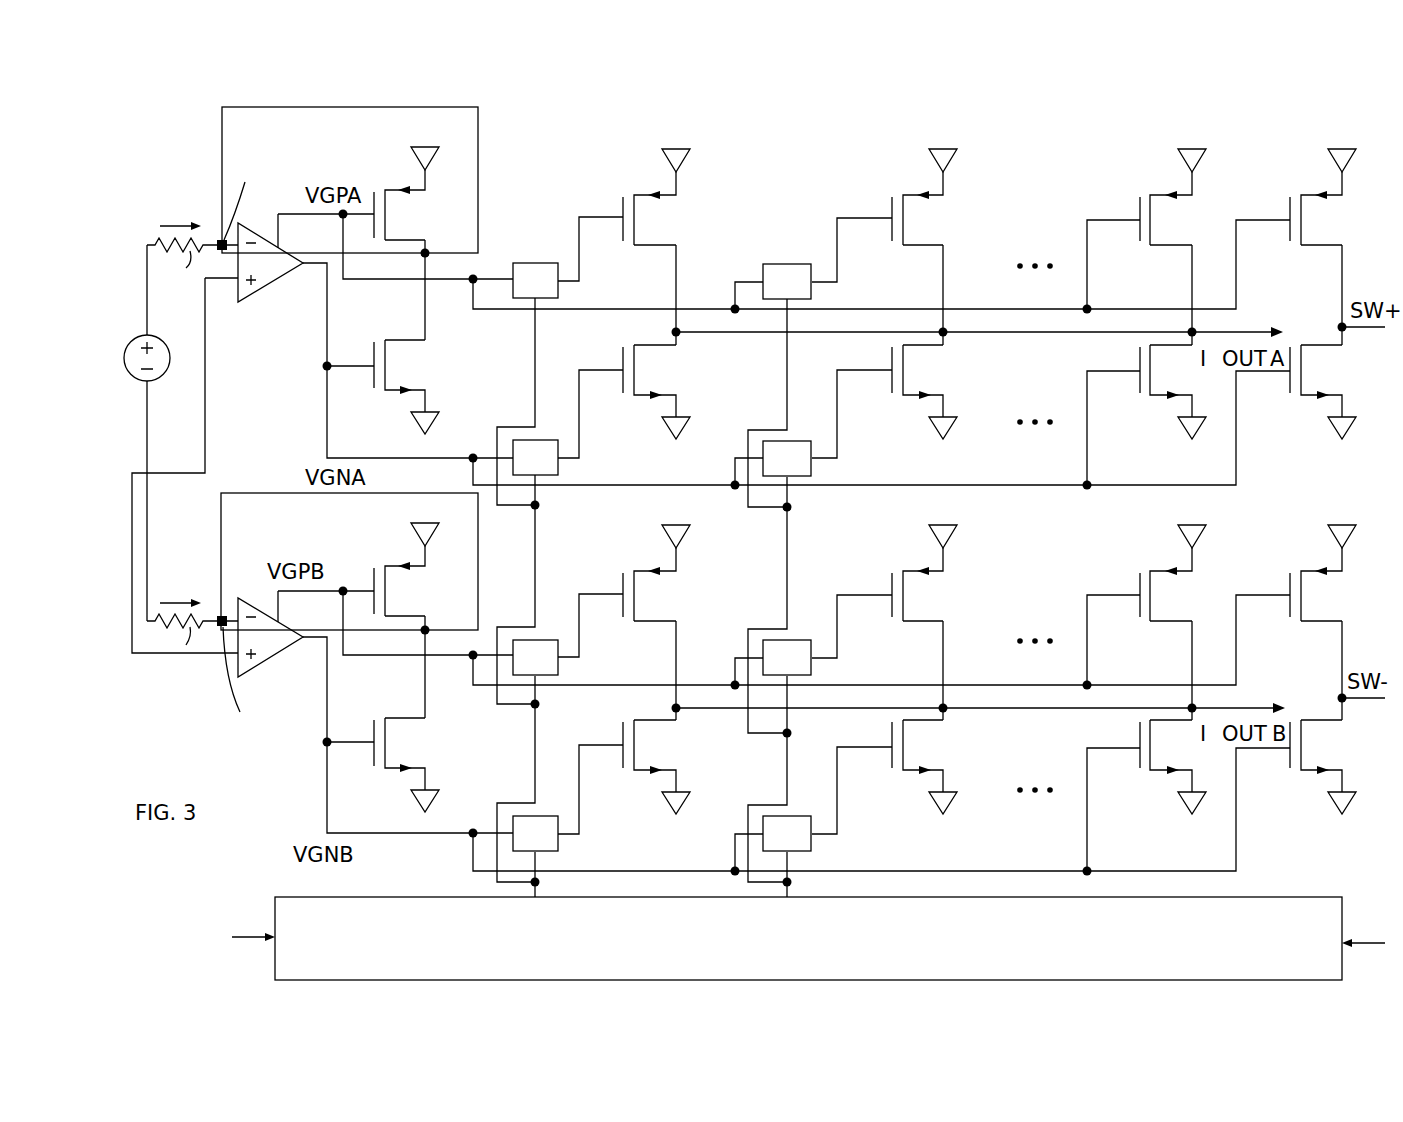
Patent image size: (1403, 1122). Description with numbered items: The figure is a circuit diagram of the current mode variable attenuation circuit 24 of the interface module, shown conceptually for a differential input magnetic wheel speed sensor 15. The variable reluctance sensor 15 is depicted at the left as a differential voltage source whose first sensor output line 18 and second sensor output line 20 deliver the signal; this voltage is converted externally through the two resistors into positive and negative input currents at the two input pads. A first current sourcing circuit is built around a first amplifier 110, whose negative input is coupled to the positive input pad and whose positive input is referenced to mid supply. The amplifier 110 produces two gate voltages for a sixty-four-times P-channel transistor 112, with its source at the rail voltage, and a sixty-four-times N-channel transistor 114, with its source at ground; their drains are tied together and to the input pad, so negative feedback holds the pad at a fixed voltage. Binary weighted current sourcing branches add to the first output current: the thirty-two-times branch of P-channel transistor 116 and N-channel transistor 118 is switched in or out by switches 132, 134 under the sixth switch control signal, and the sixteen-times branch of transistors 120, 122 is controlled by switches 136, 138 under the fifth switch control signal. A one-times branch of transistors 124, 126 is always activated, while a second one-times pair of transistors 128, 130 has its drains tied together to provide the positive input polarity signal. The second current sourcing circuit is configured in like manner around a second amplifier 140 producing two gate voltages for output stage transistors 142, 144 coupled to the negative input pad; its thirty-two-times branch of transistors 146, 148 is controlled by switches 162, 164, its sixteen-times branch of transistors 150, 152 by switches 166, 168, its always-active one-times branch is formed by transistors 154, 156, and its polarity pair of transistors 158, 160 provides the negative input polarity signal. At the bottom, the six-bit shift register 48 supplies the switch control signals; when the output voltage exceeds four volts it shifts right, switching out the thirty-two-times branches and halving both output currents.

The first sensor output line 18 is at (146, 242).
The magnetic sensor 15 is at (170, 358).
The second sensor output line 20 is at (147, 422).
The first amplifier 110 is at (278, 283).
The 64× P-channel transistor 112 is at (372, 196).
The 64× N-channel transistor 114 is at (372, 342).
The 32× P-channel transistor 116 is at (622, 196).
The 32× N-channel transistor 118 is at (622, 348).
The 16× P-channel transistor 120 is at (892, 197).
The 16× N-channel transistor 122 is at (892, 348).
The 1× P-channel transistor 124 is at (1140, 197).
The 1× N-channel transistor 126 is at (1140, 396).
The 1× P-channel transistor 128 is at (1290, 198).
The 1× N-channel transistor 130 is at (1290, 396).
The switch 132 is at (537, 263).
The switch 134 is at (540, 440).
The switch 136 is at (790, 264).
The switch 138 is at (790, 441).
The second amplifier 140 is at (280, 656).
The 64× P-channel transistor 142 is at (372, 572).
The 64× N-channel transistor 144 is at (372, 719).
The 32× P-channel transistor 146 is at (622, 572).
The 32× N-channel transistor 148 is at (622, 721).
The 16× P-channel transistor 150 is at (892, 573).
The 16× N-channel transistor 152 is at (892, 722).
The 1× P-channel transistor 154 is at (1140, 573).
The 1× N-channel transistor 156 is at (1140, 772).
The 1× P-channel transistor 158 is at (1290, 574).
The 1× N-channel transistor 160 is at (1290, 772).
The switch 162 is at (537, 640).
The switch 164 is at (540, 816).
The switch 166 is at (790, 640).
The switch 168 is at (790, 816).
The variable attenuation circuit 24 is at (760, 196).
The shift register 48 is at (452, 893).